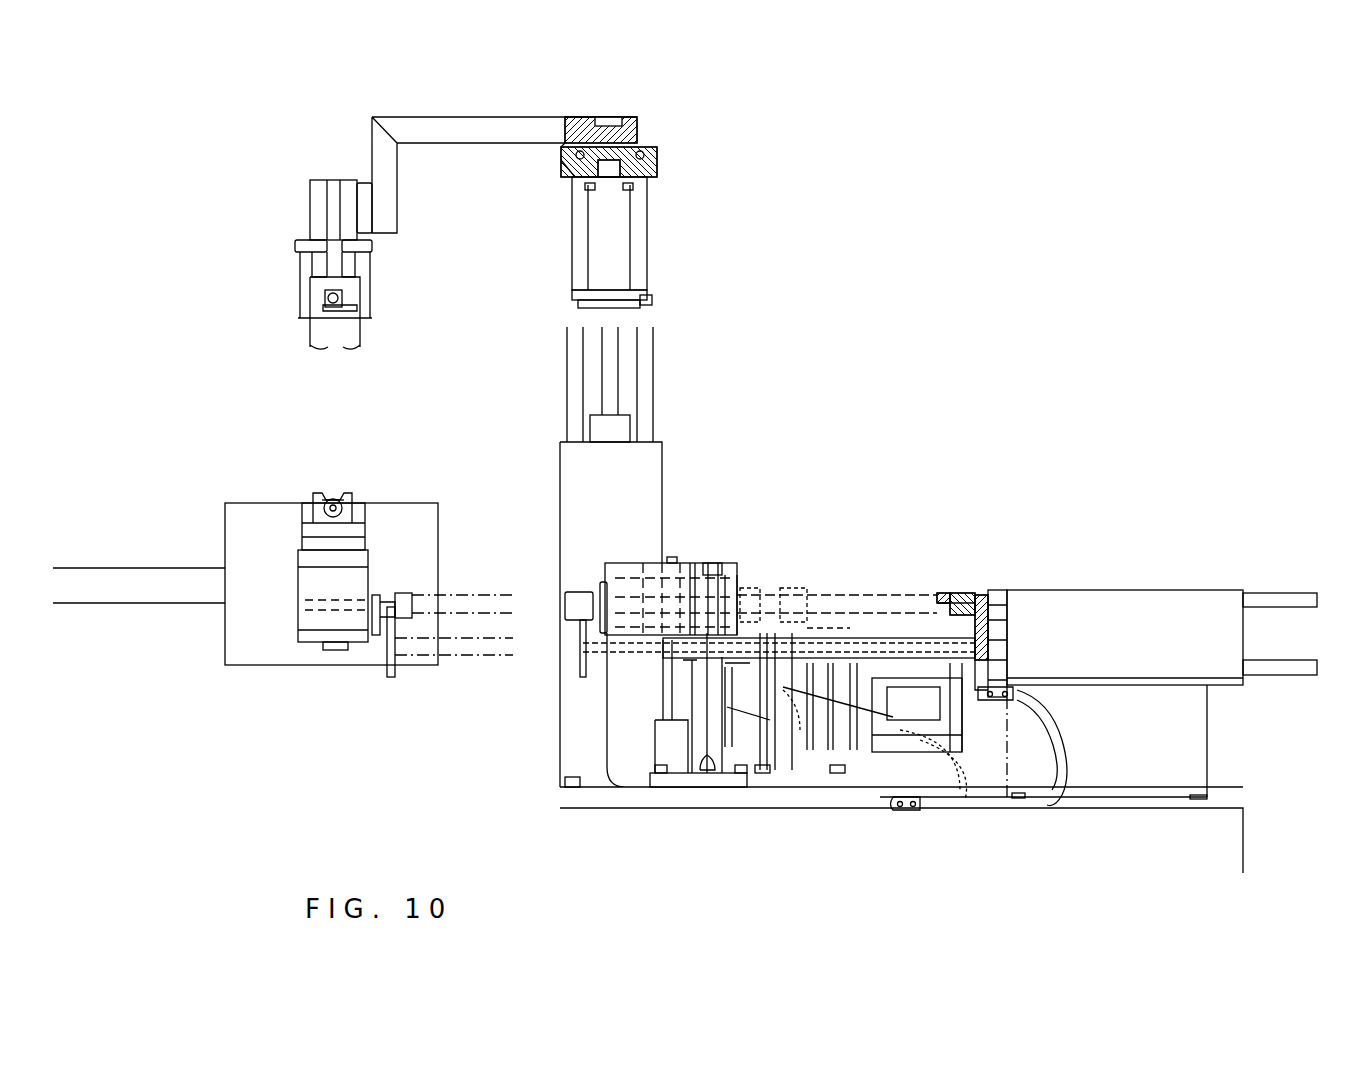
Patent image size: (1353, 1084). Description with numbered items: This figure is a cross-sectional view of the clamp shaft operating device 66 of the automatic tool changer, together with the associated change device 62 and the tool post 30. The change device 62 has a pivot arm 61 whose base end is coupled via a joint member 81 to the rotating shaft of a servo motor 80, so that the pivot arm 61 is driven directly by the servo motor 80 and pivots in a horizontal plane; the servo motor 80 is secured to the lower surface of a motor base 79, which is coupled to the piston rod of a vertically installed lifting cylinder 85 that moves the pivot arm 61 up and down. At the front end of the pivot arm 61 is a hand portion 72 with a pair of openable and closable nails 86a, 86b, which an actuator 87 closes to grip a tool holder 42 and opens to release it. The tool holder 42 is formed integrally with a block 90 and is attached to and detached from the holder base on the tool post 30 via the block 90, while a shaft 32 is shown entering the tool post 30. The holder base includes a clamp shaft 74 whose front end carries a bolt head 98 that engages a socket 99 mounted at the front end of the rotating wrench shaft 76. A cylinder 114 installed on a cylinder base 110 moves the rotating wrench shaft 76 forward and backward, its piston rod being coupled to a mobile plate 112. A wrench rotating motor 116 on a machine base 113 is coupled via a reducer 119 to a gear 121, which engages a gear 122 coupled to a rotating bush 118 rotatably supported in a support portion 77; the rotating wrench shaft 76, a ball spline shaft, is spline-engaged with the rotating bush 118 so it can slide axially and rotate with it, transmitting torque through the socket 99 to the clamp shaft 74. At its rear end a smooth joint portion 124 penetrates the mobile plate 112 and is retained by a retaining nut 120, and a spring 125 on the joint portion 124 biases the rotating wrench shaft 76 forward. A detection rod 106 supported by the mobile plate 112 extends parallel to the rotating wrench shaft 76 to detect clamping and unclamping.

The pivot arm 61 is at (482, 127).
The joint member 81 is at (610, 123).
The motor base 79 is at (560, 168).
The change device 62 is at (713, 147).
The servo motor 80 is at (637, 233).
The actuator 87 is at (333, 183).
The hand portion 72 is at (284, 210).
The nail 86a is at (300, 287).
The nail 86b is at (370, 288).
The lifting cylinder 85 is at (602, 428).
The tool post 30 is at (257, 523).
The shaft 32 is at (137, 592).
The tool holder 42 is at (333, 500).
The block 90 is at (307, 583).
The clamp shaft 74 is at (307, 608).
The bolt head 98 is at (390, 613).
The socket 99 is at (402, 600).
The support portion 77 is at (620, 730).
The rotating bush 118 is at (642, 560).
The gear 122 is at (713, 562).
The rotating wrench shaft 76 is at (823, 603).
The detection rod 106 is at (858, 642).
The reducer 119 is at (762, 690).
The gear 121 is at (713, 773).
The wrench rotating motor 116 is at (925, 705).
The spring 125 is at (947, 595).
The joint portion 124 is at (955, 593).
The mobile plate 112 is at (982, 593).
The retaining nut 120 is at (1005, 603).
The clamp shaft operating device 66 is at (1022, 546).
The cylinder 114 is at (1178, 612).
The cylinder base 110 is at (1188, 747).
The machine base 113 is at (1218, 840).